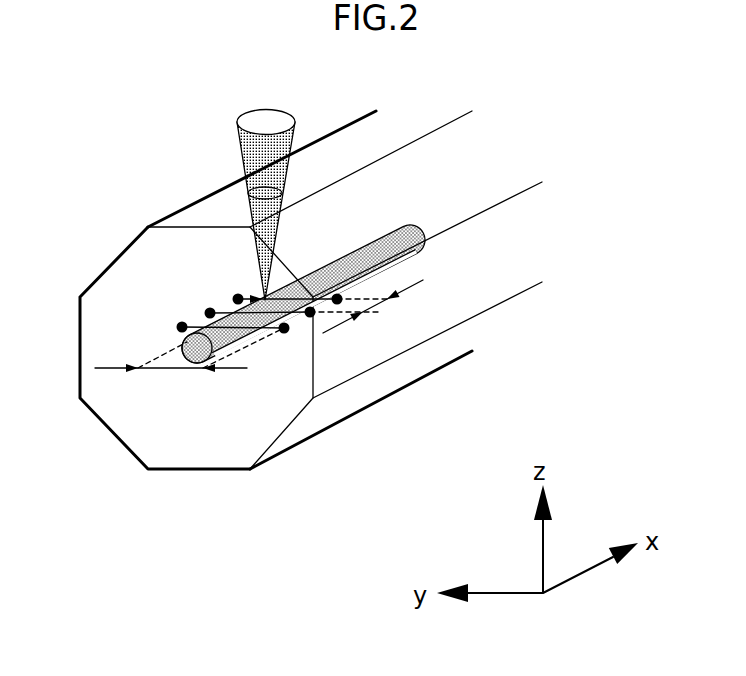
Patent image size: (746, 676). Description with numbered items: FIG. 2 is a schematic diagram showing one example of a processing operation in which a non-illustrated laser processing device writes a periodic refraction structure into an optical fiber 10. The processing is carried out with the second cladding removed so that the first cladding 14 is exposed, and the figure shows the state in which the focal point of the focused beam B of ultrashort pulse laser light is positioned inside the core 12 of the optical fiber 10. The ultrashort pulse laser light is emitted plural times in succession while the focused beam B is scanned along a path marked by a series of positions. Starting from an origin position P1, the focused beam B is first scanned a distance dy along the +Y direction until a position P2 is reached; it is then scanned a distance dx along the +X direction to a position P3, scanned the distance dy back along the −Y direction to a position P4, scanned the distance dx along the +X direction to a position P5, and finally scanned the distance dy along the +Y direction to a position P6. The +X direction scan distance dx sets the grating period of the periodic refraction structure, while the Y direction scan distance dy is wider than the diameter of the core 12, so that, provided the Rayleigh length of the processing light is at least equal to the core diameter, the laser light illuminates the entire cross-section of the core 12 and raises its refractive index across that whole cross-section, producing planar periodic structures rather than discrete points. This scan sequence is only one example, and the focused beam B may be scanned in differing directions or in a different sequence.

The optical fiber 10 is at (575, 198).
The core 12 is at (356, 260).
The first cladding 14 is at (117, 262).
The focused beam B is at (262, 152).
The origin position P1 is at (284, 328).
The position P2 is at (182, 327).
The position P3 is at (210, 313).
The position P4 is at (310, 312).
The position P5 is at (337, 299).
The position P6 is at (238, 299).
The +X direction scan distance dx is at (380, 300).
The Y direction scan distance dy is at (166, 369).